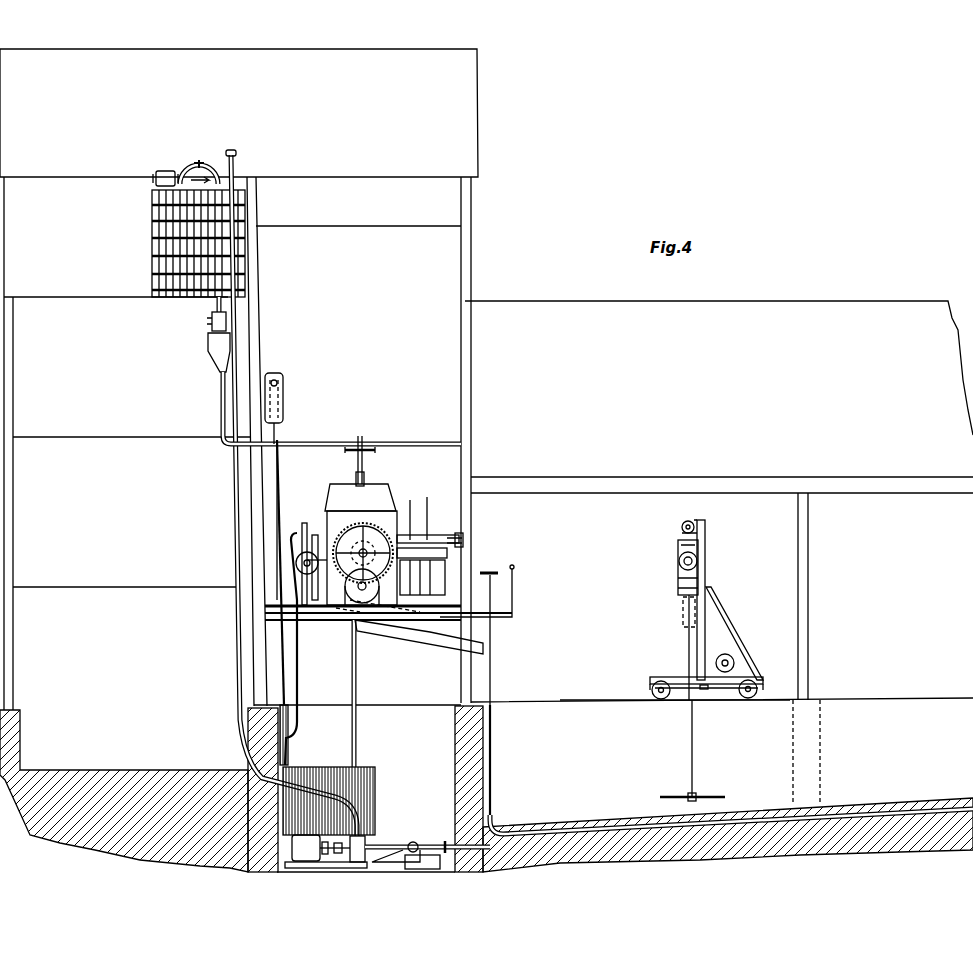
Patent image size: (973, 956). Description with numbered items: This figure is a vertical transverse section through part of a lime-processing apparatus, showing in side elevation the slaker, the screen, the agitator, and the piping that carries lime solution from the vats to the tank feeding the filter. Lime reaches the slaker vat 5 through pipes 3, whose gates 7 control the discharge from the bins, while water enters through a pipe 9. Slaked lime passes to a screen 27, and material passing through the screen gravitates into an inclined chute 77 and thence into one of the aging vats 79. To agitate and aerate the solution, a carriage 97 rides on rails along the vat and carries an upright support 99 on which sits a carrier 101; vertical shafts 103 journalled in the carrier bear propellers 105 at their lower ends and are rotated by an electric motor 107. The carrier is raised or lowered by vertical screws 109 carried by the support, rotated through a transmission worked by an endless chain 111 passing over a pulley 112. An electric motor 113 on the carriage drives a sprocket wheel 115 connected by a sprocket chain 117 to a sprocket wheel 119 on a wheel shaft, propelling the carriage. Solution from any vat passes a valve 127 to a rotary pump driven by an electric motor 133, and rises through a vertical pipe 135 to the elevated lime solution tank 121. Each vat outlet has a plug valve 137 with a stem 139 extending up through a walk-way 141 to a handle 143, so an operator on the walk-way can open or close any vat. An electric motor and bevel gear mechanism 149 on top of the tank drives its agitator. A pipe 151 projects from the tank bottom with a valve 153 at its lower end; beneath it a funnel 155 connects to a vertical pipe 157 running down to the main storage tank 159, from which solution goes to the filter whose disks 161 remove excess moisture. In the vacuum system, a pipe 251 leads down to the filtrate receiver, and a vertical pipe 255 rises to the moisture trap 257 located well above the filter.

The pipe 3 is at (364, 459).
The slaker vat 5 is at (322, 512).
The gate 7 is at (376, 449).
The pipe 9 is at (366, 476).
The screen 27 is at (356, 639).
The inclined chute 77 is at (397, 632).
The aging vat 79 is at (675, 723).
The carriage 97 is at (660, 679).
The upright support 99 is at (697, 644).
The carrier 101 is at (676, 580).
The vertical shaft 103 is at (692, 731).
The propeller 105 is at (715, 796).
The electric motor 107 is at (679, 563).
The vertical screw 109 is at (686, 620).
The endless chain 111 is at (684, 614).
The pulley 112 is at (682, 526).
The electric motor 113 is at (744, 655).
The sprocket wheel 115 is at (735, 664).
The sprocket chain 117 is at (763, 680).
The sprocket wheel 119 is at (758, 689).
The lime solution tank 121 is at (152, 205).
The valve 127 is at (417, 844).
The electric motor 133 is at (362, 843).
The vertical pipe 135 is at (240, 321).
The plug valve 137 is at (503, 827).
The stem 139 is at (492, 683).
The walk-way 141 is at (505, 617).
The handle 143 is at (514, 567).
The electric motor and bevel gear mechanism 149 is at (167, 173).
The pipe 151 is at (216, 306).
The valve 153 is at (211, 323).
The funnel 155 is at (208, 345).
The vertical pipe 157 is at (221, 401).
The main storage tank 159 is at (376, 794).
The disk 161 is at (421, 505).
The pipe 251 is at (298, 673).
The vertical pipe 255 is at (278, 479).
The moisture trap 257 is at (284, 387).